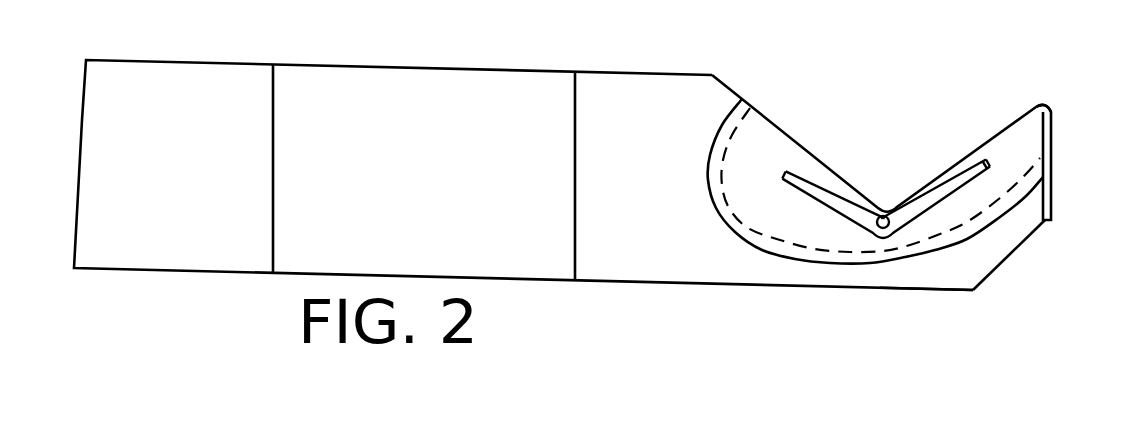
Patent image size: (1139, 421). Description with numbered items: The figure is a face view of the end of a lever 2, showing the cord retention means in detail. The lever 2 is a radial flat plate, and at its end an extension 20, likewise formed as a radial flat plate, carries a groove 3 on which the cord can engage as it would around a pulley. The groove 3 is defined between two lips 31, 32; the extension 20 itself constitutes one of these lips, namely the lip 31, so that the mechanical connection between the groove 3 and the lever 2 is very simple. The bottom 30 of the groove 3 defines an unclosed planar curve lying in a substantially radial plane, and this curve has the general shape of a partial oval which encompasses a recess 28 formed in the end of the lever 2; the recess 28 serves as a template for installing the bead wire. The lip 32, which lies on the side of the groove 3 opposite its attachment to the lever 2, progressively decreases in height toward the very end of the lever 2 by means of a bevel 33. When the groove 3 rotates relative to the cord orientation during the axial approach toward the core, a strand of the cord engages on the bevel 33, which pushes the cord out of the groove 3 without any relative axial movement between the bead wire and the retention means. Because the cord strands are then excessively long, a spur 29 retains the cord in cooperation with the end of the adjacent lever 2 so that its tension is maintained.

The lever 2 is at (143, 192).
The extension 20 is at (665, 100).
The recess 28 is at (867, 160).
The spur 29 is at (964, 187).
The bottom of the groove 30 is at (813, 254).
The lip 31 is at (1053, 153).
The lip 32 is at (1042, 220).
The bevel 33 is at (1052, 112).
The groove 3 is at (897, 269).